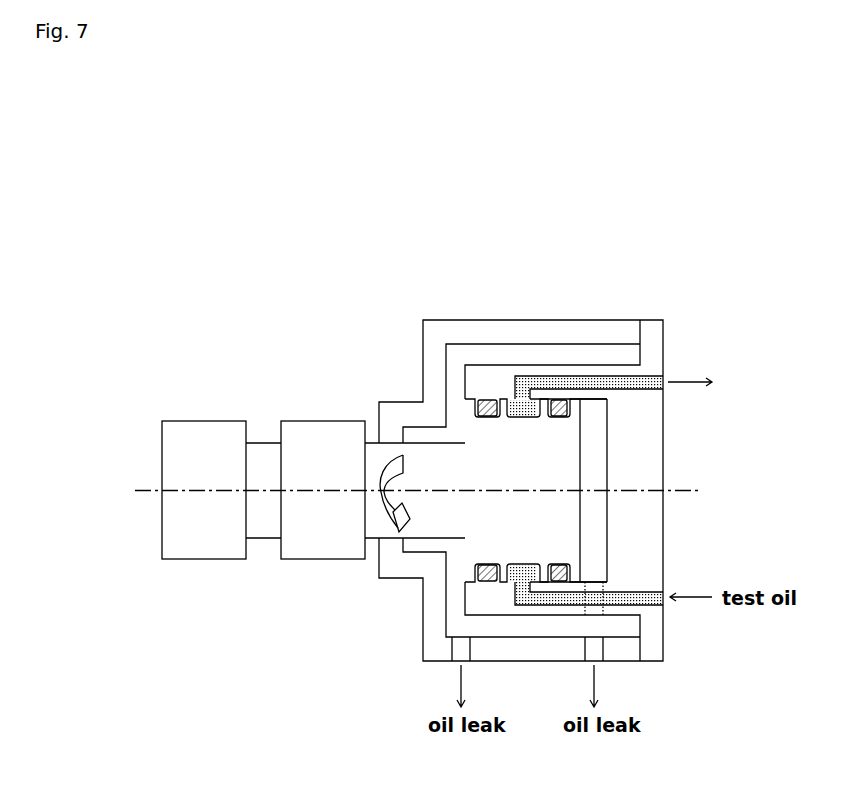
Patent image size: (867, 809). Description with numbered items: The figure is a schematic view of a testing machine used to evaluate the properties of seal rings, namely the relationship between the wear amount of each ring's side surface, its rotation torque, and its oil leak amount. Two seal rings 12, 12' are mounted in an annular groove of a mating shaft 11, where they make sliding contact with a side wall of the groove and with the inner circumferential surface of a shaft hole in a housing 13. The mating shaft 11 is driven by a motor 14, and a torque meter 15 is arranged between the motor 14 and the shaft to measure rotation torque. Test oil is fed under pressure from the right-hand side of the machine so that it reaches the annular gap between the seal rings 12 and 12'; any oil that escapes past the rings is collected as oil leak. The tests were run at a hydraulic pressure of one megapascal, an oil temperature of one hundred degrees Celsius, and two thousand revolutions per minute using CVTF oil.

The mating shaft 11 is at (428, 522).
The seal ring 12 is at (505, 421).
The seal ring 12' is at (590, 421).
The housing 13 is at (475, 600).
The motor 14 is at (207, 445).
The torque meter 15 is at (327, 445).